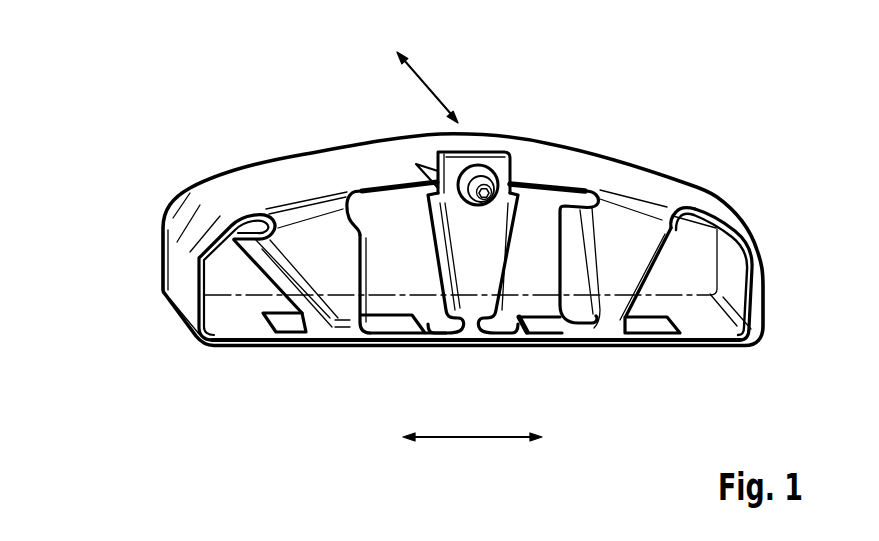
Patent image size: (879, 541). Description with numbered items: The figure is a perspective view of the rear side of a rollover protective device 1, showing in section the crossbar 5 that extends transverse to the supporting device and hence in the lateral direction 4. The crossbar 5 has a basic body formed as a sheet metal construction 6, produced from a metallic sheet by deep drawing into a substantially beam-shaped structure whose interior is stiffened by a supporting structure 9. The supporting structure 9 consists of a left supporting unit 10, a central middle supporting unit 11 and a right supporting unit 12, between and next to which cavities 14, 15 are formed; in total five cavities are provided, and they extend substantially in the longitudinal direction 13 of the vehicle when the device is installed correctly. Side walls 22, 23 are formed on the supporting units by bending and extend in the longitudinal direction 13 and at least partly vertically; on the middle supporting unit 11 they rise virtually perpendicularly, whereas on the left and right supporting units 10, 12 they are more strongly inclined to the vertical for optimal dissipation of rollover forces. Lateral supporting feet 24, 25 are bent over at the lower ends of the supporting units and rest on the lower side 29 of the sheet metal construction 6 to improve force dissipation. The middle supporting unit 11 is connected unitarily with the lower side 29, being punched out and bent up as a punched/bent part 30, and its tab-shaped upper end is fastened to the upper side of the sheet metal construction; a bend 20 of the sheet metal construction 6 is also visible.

The rollover protective device 1 is at (692, 93).
The lateral direction 4 is at (471, 438).
The crossbar 5 is at (223, 163).
The sheet metal construction 6 is at (692, 196).
The supporting structure 9 is at (647, 223).
The supporting unit 10 is at (322, 245).
The supporting unit 11 is at (480, 290).
The supporting unit 12 is at (620, 234).
The longitudinal direction 13 is at (428, 78).
The cavity 14 is at (390, 228).
The cavity 15 is at (534, 226).
The bend 20 is at (293, 219).
The side wall 22 is at (578, 263).
The side wall 23 is at (512, 281).
The supporting foot 24 is at (284, 322).
The supporting foot 25 is at (381, 321).
The lower side 29 is at (707, 345).
The punched/bent part 30 is at (339, 288).